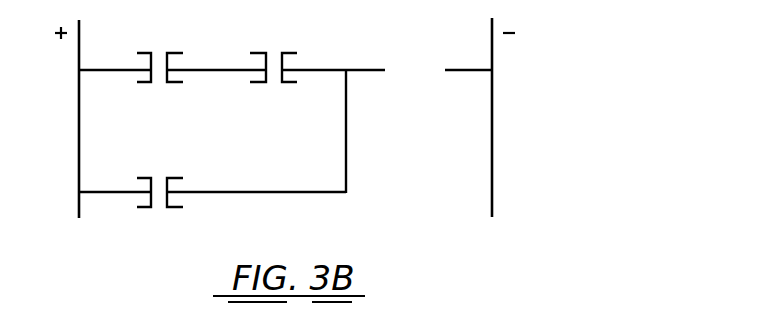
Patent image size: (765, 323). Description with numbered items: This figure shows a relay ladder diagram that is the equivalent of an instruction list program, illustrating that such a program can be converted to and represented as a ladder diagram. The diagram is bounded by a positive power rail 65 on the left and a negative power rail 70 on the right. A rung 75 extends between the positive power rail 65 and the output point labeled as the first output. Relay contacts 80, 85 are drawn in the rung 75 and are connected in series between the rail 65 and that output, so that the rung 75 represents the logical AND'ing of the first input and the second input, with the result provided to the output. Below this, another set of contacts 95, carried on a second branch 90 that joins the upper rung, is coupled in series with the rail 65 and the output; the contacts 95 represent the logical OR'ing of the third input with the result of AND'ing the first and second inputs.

The positive power rail 65 is at (79, 147).
The negative power rail 70 is at (492, 95).
The rung 75 is at (217, 62).
The relay contact 80 is at (158, 50).
The relay contact 85 is at (275, 53).
The lower rung 90 is at (208, 194).
The set of contacts 95 is at (158, 175).